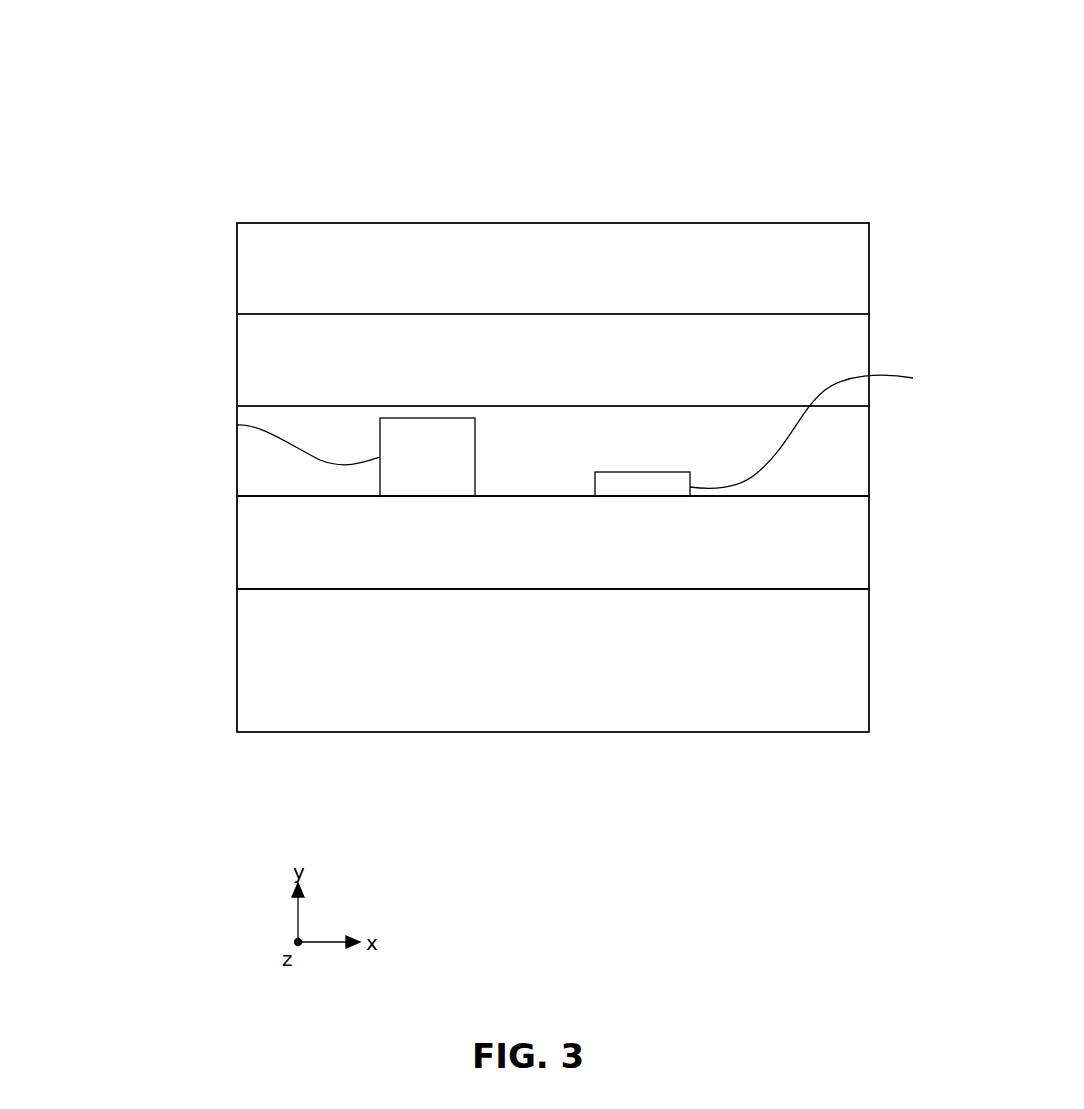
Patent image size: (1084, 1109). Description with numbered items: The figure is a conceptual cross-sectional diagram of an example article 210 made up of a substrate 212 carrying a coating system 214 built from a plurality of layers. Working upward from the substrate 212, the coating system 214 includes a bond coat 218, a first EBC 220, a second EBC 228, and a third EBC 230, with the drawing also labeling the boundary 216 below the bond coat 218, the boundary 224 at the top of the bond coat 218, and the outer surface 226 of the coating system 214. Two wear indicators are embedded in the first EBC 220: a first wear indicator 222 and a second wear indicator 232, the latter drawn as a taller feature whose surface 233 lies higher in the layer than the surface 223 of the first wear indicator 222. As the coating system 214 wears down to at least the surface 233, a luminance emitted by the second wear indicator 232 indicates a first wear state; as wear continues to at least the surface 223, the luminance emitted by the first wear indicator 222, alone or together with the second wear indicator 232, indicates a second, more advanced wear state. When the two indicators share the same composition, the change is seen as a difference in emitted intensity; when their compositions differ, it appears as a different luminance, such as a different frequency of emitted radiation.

The article 210 is at (170, 60).
The substrate 212 is at (260, 676).
The coating system 214 is at (122, 214).
The interface 216 is at (848, 589).
The bond coat 218 is at (260, 545).
The first EBC 220 is at (260, 484).
The first wear indicator 222 is at (828, 427).
The surface of first wear indicator 223 is at (627, 472).
The interface 224 is at (845, 496).
The top surface 226 is at (705, 223).
The second EBC 228 is at (257, 364).
The third EBC 230 is at (257, 262).
The second wear indicator 232 is at (237, 425).
The surface of second wear indicator 233 is at (415, 418).